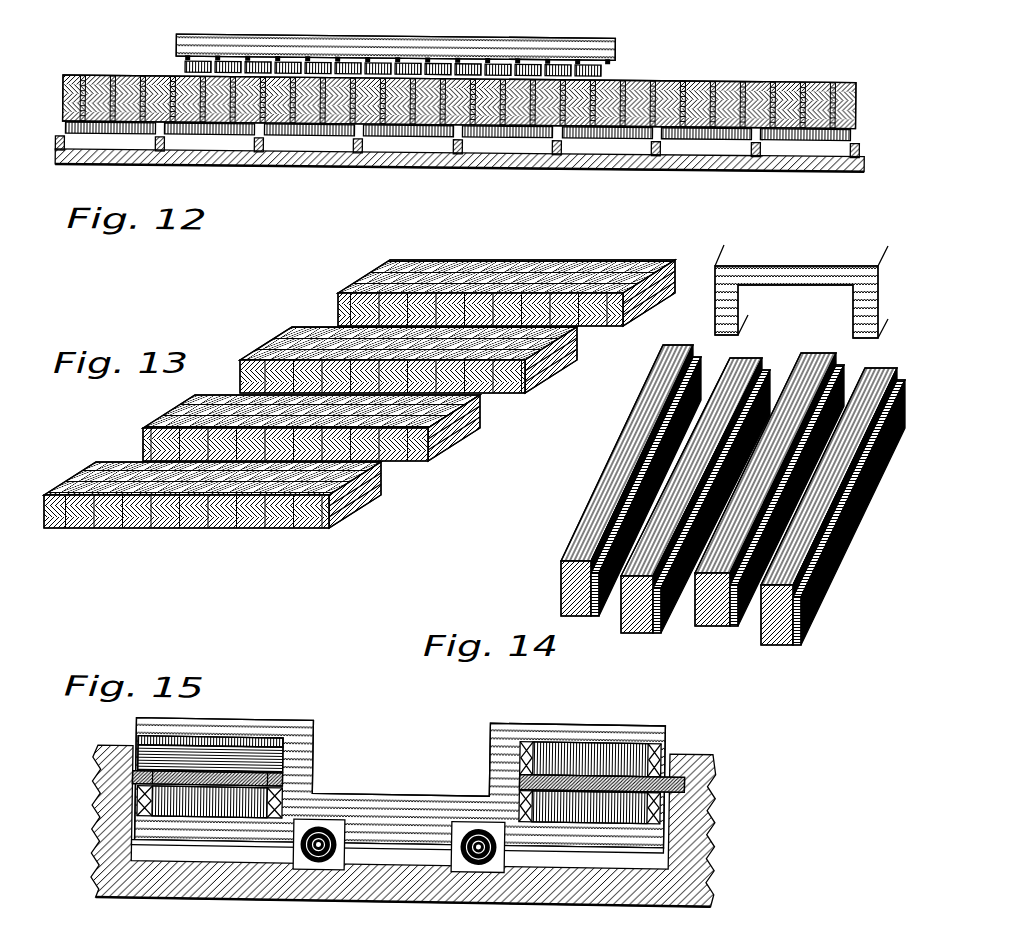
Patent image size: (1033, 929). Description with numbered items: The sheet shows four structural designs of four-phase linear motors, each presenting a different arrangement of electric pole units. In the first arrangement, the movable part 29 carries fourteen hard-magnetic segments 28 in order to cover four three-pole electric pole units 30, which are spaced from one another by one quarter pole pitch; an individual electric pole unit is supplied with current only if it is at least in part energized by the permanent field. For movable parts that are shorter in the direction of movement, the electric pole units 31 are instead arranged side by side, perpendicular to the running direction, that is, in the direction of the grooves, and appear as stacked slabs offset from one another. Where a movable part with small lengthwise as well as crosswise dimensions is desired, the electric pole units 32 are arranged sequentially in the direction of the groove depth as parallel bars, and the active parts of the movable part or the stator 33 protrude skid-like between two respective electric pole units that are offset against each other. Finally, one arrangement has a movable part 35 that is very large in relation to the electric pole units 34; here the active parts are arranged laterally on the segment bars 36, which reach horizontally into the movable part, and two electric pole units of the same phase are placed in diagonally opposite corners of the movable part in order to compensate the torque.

In FIG. 12, the hard-magnetic segments 28 is at (600, 62).
In FIG. 12, the movable part 29 is at (607, 47).
In FIG. 12, the electric pole units 30 is at (107, 113).
In FIG. 13, the electric pole units 31 is at (473, 422).
In FIG. 14, the electric pole units 32 is at (583, 608).
In FIG. 14, the stator 33 is at (757, 267).
In FIG. 15, the electric pole units 34 is at (518, 791).
In FIG. 15, the movable part 35 is at (282, 722).
In FIG. 15, the segment bars 36 is at (667, 771).